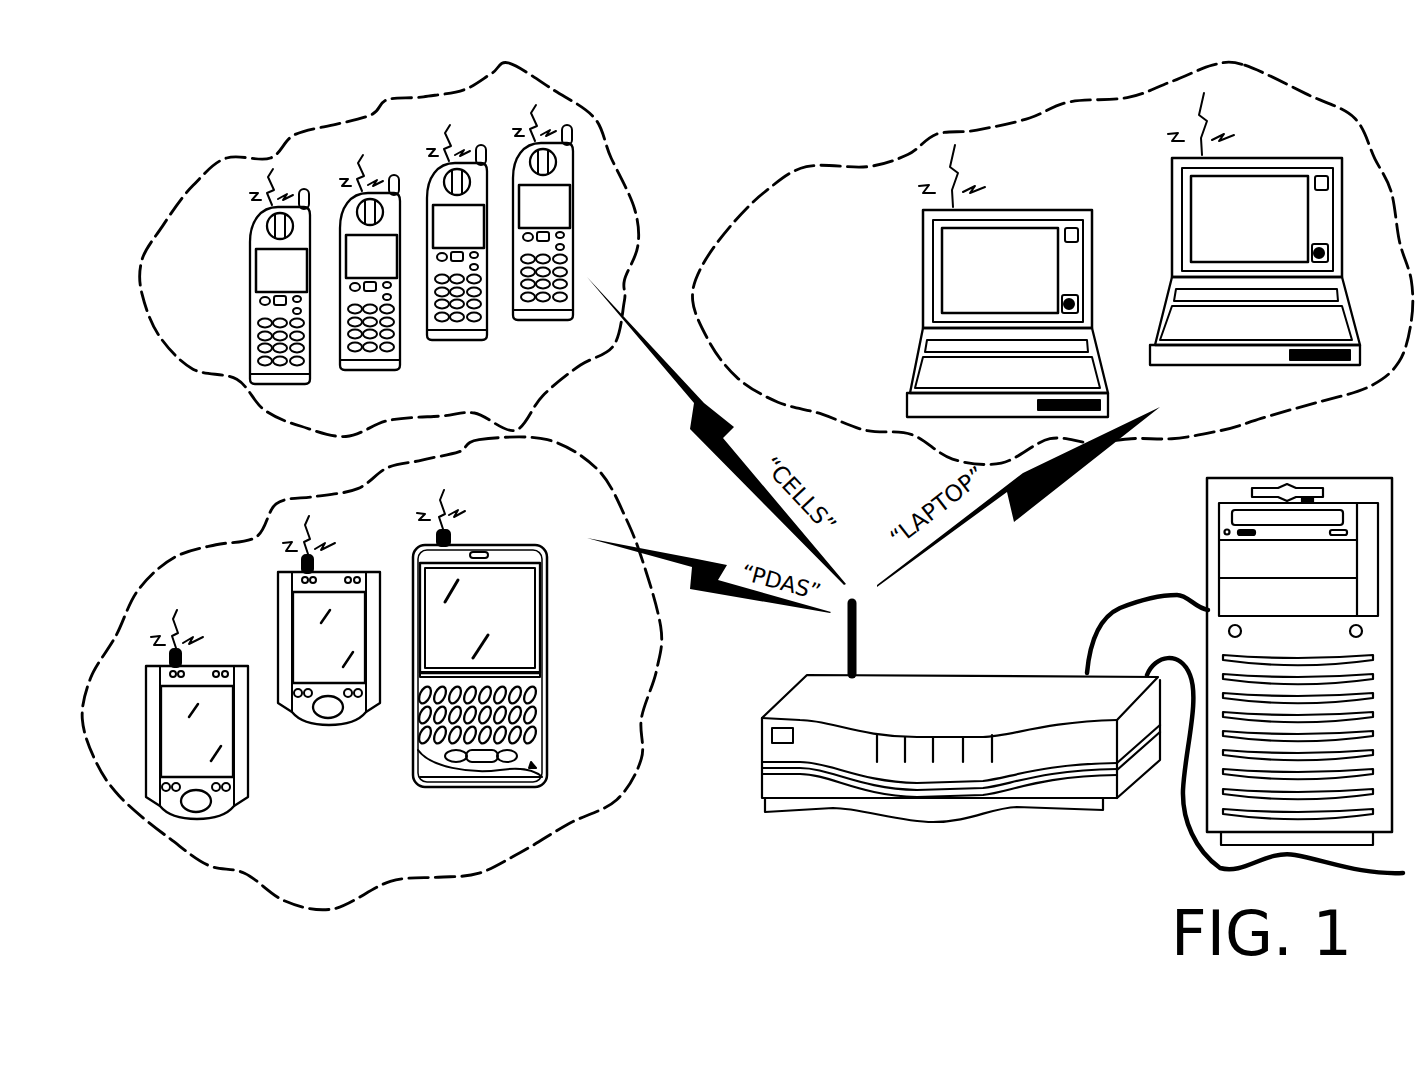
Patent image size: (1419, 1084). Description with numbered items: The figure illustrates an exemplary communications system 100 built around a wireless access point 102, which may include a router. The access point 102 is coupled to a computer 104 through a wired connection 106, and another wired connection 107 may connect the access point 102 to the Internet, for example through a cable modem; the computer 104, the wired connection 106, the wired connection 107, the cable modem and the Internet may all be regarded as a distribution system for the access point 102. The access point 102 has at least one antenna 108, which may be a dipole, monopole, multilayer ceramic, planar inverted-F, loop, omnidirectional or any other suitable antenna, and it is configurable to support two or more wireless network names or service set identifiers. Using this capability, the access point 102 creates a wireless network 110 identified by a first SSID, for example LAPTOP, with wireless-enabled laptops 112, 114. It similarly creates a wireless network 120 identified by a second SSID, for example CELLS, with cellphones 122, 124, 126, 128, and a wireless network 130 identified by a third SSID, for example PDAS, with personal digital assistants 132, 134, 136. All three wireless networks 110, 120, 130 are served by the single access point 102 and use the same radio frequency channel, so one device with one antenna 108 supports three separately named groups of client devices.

The communications system 100 is at (690, 848).
The wireless access point 102 is at (957, 673).
The computer 104 is at (1311, 478).
The wired connection 106 is at (1128, 604).
The wired connection 107 is at (1174, 818).
The antenna 108 is at (855, 648).
The wireless network 110 is at (826, 168).
The wireless-enabled laptop 112 is at (912, 380).
The wireless-enabled laptop 114 is at (1158, 318).
The wireless network 120 is at (378, 108).
The cellphone 122 is at (247, 311).
The cellphone 124 is at (367, 367).
The cellphone 126 is at (457, 337).
The cellphone 128 is at (573, 258).
The wireless network 130 is at (286, 507).
The personal digital assistant 132 is at (276, 639).
The personal digital assistant 134 is at (545, 702).
The personal digital assistant 136 is at (252, 748).